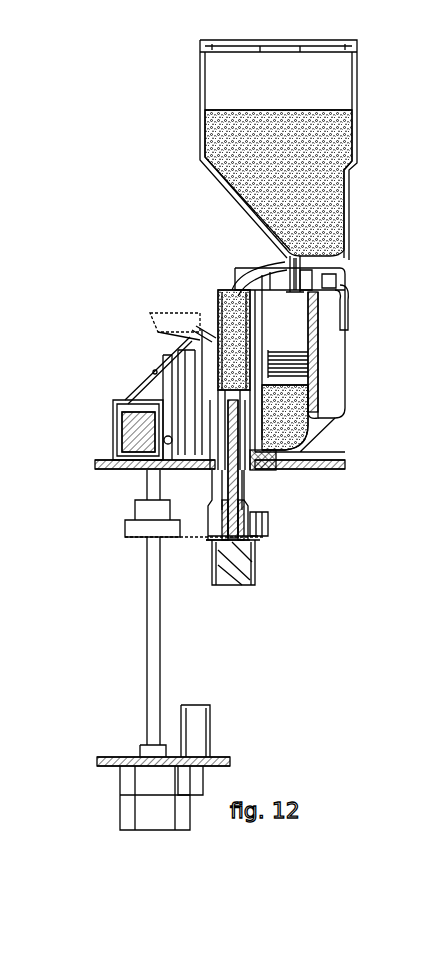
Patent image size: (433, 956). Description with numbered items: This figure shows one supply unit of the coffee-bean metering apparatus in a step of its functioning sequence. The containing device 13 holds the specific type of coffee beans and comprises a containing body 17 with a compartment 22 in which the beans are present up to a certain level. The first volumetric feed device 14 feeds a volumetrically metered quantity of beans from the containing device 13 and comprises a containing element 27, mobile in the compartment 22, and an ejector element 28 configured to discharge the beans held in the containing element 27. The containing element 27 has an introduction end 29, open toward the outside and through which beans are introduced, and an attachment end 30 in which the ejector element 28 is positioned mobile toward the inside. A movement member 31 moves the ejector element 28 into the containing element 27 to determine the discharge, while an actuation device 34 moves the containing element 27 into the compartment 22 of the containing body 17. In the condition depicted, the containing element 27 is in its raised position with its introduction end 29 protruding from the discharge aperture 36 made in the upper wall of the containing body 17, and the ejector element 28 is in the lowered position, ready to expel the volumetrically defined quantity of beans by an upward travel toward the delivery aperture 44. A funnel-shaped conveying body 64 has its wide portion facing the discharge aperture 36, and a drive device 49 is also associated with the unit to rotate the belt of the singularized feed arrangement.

The containing device 13 is at (362, 203).
The discharge aperture 36 is at (302, 267).
The containing element 27 is at (215, 300).
The introduction end 29 is at (217, 290).
The containing body 17 is at (340, 350).
The compartment 22 is at (308, 400).
The ejector element 28 is at (273, 463).
The first volumetric feed device 14 is at (265, 477).
The attachment end 30 is at (264, 527).
The movement member 31 is at (233, 588).
The delivery aperture 44 is at (160, 321).
The conveying body 64 is at (141, 382).
The drive device 49 is at (123, 401).
The actuation device 34 is at (80, 763).